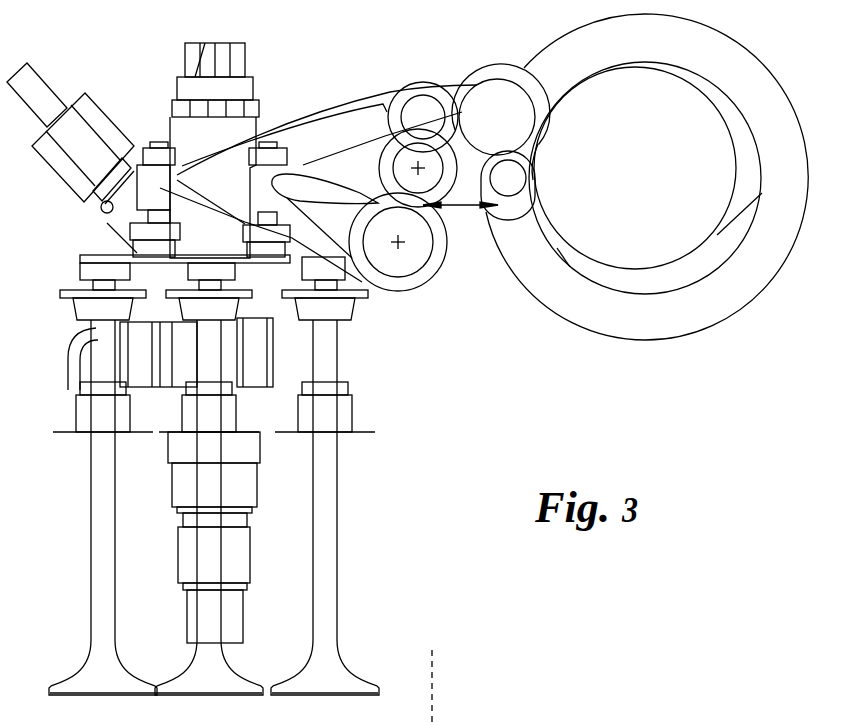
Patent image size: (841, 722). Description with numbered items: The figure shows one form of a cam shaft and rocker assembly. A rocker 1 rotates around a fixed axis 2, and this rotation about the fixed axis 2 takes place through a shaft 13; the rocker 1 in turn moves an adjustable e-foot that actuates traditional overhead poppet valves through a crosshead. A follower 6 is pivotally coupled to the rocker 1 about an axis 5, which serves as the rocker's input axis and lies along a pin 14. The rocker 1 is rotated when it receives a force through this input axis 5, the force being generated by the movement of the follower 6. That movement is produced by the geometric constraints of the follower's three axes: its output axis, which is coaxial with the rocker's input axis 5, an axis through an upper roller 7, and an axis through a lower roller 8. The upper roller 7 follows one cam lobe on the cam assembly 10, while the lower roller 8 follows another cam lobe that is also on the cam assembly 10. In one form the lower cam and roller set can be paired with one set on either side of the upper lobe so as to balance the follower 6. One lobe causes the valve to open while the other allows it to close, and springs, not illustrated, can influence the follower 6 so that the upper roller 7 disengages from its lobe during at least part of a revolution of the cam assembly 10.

The rocker 1 is at (323, 107).
The fixed axis 2 is at (407, 247).
The axis 5 is at (418, 165).
The follower 6 is at (469, 686).
The upper roller 7 is at (500, 63).
The lower roller 8 is at (472, 102).
The cam assembly 10 is at (745, 336).
The shaft 13 is at (398, 273).
The pin 14 is at (437, 180).